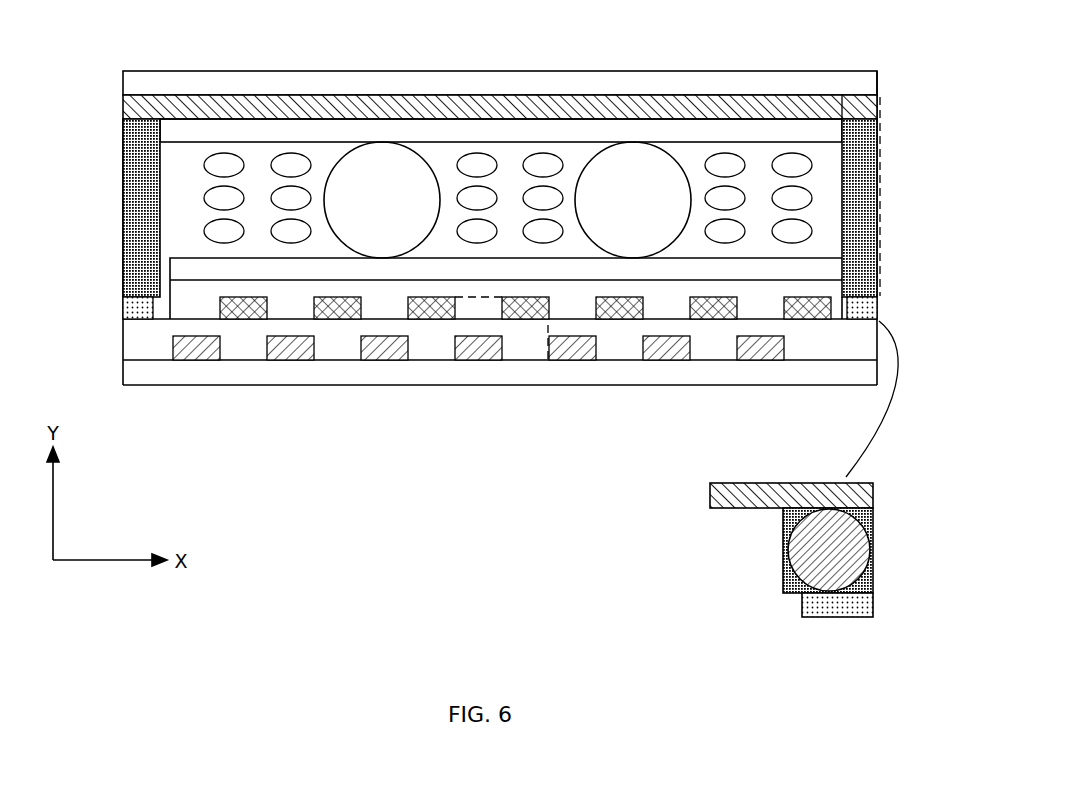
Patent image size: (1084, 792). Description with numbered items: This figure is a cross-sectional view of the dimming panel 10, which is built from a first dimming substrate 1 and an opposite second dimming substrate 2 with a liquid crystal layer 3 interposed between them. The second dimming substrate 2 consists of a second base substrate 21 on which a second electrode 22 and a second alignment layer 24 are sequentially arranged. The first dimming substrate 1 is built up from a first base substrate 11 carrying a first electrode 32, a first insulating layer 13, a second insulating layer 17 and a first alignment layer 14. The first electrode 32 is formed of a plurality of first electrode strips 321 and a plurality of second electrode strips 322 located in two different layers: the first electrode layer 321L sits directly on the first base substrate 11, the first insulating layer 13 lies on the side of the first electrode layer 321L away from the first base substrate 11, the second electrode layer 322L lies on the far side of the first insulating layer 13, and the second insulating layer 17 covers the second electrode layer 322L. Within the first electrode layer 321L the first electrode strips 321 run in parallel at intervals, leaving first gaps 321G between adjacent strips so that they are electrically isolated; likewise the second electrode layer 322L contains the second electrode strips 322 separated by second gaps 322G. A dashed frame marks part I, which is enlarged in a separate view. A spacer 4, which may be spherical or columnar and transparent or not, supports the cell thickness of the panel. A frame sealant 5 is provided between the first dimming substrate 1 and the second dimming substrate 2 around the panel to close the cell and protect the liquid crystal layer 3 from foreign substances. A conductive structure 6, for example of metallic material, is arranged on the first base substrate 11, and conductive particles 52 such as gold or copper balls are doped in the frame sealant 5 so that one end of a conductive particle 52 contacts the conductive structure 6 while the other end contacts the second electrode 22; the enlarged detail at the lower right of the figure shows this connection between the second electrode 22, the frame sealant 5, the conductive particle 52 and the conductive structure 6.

The dimming panel 10 is at (465, 39).
The second dimming substrate 2 is at (925, 58).
The second base substrate 21 is at (858, 82).
The second electrode 22 is at (858, 107).
The second alignment layer 24 is at (820, 133).
The liquid crystal layer 3 is at (225, 165).
The spacer 4 is at (393, 187).
The frame sealant 5 is at (123, 183).
The conductive particle 52 is at (812, 565).
The conductive structure 6 is at (862, 311).
The first dimming substrate 1 is at (81, 278).
The first alignment layer 14 is at (196, 270).
The second insulating layer 17 is at (192, 305).
The first insulating layer 13 is at (138, 336).
The first electrode 32 is at (173, 347).
The first base substrate 11 is at (138, 376).
The first electrode strip 321 is at (207, 350).
The first gap 321G is at (246, 350).
The first electrode layer 321L is at (210, 424).
The part I is at (408, 327).
The second electrode strip 322 is at (618, 310).
The second gap 322G is at (670, 307).
The second electrode layer 322L is at (708, 424).